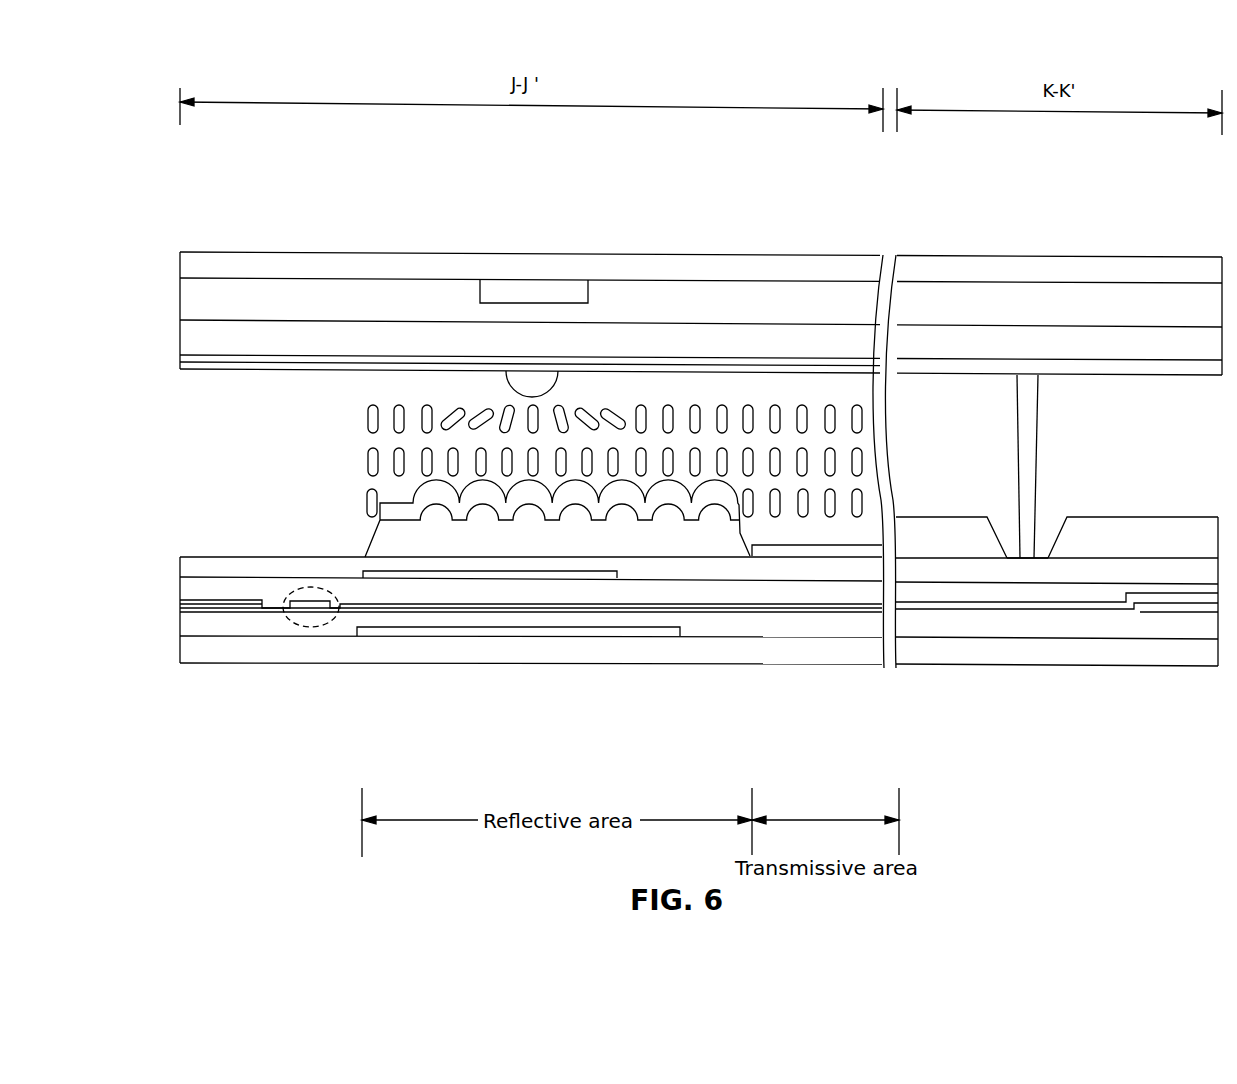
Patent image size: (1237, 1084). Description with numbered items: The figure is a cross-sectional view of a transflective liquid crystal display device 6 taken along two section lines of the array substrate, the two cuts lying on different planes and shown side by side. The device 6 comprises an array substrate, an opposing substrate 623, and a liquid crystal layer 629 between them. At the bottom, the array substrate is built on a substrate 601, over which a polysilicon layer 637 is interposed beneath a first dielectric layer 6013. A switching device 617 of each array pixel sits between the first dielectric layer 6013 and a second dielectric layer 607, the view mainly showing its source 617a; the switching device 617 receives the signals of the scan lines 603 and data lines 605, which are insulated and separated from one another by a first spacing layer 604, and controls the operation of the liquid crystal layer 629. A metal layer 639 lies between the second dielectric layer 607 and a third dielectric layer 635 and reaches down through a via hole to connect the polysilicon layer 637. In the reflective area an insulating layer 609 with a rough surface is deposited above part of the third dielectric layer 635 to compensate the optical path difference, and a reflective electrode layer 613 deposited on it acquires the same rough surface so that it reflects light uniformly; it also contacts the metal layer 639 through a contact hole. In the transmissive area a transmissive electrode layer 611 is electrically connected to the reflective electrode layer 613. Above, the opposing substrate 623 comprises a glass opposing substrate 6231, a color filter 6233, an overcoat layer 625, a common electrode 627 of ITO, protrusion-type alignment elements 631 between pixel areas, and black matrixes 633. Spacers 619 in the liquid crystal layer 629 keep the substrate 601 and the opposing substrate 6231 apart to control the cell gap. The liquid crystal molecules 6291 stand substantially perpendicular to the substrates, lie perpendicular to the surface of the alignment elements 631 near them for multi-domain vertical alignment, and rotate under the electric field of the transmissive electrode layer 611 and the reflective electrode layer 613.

The liquid crystal display device 6 is at (1073, 196).
The substrate 601 is at (716, 647).
The scan lines 603 is at (205, 607).
The first spacing layer 604 is at (662, 610).
The data lines 605 is at (927, 605).
The second dielectric layer 607 is at (820, 593).
The first dielectric layer 6013 is at (877, 618).
The insulating layer 609 is at (542, 545).
The transmissive electrode layer 611 is at (777, 553).
The reflective electrode layer 613 is at (477, 497).
The switching device 617 is at (307, 630).
The source 617a is at (312, 604).
The spacers 619 is at (1028, 408).
The opposing substrate 623 is at (417, 185).
The opposing substrate 6231 is at (952, 268).
The color filter 6233 is at (630, 308).
The overcoat layer 625 is at (767, 340).
The common electrode 627 is at (827, 363).
The liquid crystal layer 629 is at (710, 413).
The liquid crystal molecules 6291 is at (862, 419).
The alignment elements 631 is at (518, 382).
The black matrixes 633 is at (536, 287).
The third dielectric layer 635 is at (1013, 570).
The polysilicon layer 637 is at (613, 630).
The metal layer 639 is at (434, 578).